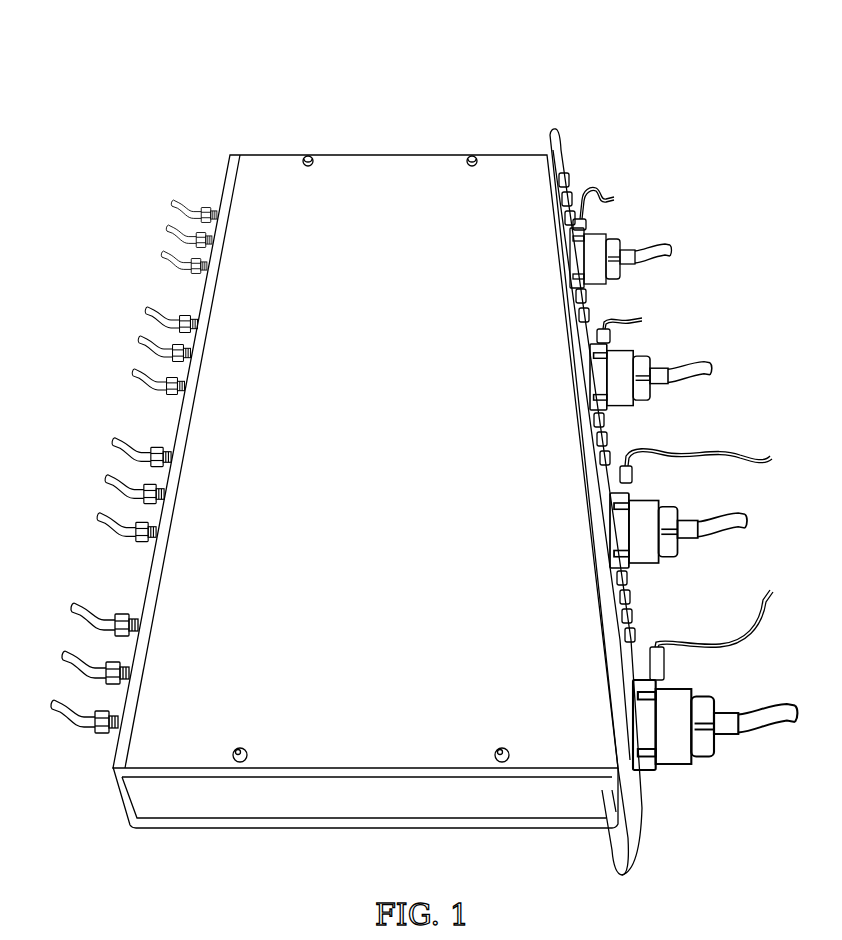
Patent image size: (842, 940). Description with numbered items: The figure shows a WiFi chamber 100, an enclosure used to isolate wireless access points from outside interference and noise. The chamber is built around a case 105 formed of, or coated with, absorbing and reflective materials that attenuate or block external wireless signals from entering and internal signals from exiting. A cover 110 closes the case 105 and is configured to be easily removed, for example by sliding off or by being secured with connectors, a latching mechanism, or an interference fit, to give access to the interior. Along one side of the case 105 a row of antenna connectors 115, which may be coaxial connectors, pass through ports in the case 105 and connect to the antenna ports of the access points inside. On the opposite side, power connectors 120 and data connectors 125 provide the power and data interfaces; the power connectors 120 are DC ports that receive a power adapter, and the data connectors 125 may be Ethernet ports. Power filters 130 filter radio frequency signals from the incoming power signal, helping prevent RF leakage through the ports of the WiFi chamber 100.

The WiFi chamber 100 is at (142, 70).
The case 105 is at (256, 152).
The cover 110 is at (503, 158).
The antenna connectors 115 is at (170, 282).
The power connectors 120 is at (612, 336).
The data connectors 125 is at (610, 410).
The power filters 130 is at (567, 183).